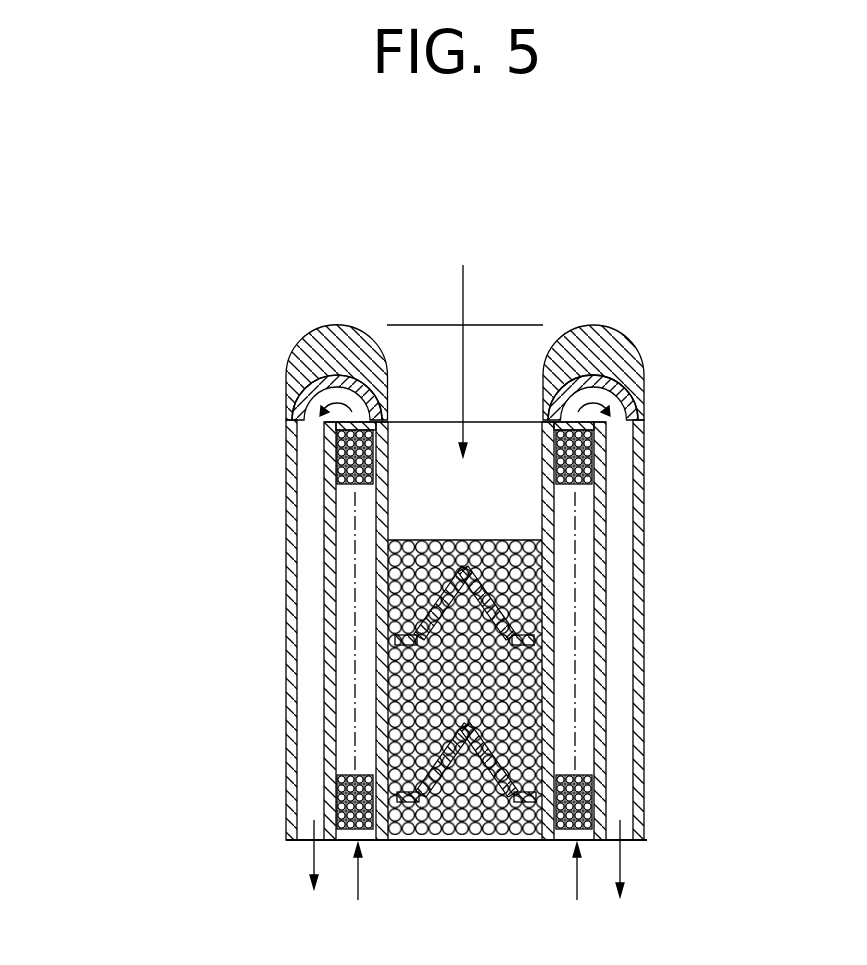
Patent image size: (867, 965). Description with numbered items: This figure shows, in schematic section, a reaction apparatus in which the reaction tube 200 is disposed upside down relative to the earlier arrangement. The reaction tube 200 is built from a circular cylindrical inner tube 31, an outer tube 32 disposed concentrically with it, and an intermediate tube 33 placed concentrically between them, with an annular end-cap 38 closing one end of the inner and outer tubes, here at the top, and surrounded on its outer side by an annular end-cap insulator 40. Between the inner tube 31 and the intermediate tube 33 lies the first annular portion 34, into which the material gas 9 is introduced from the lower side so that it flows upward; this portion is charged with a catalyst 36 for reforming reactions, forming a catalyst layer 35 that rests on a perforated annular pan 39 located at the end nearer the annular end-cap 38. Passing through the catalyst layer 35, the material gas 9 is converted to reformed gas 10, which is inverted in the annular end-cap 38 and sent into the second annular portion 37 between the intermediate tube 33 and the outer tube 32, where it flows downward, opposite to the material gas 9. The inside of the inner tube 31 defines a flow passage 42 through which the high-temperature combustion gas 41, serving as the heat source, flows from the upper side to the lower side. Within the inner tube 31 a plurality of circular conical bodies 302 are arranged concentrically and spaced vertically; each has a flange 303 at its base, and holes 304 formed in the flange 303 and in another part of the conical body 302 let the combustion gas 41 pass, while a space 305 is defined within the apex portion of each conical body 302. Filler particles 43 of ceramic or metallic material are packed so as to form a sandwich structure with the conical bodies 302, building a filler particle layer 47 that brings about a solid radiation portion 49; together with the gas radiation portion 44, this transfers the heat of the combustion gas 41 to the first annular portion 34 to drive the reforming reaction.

The reaction tube 200 is at (280, 567).
The annular end-cap insulator 40 is at (290, 383).
The annular end-cap 38 is at (300, 390).
The annular pan 39 is at (304, 440).
The outer tube 32 is at (292, 705).
The intermediate tube 33 is at (330, 655).
The second annular portion 37 is at (380, 605).
The inner tube 31 is at (370, 740).
The catalyst 36 is at (352, 788).
The catalyst layer 35 is at (352, 818).
The combustion gas 41 is at (440, 283).
The flow passage 42 is at (420, 503).
The gas radiation portion 44 is at (520, 503).
The first annular portion 34 is at (352, 842).
The flange 303 is at (500, 705).
The circular conical body 302 is at (500, 600).
The holes 304 is at (530, 638).
The space 305 is at (500, 577).
The filler particle layer 47 is at (500, 712).
The solid radiation portion 49 is at (500, 742).
The filler particles 43 is at (485, 815).
The reformed gas 10 is at (303, 348).
The material gas 9 is at (358, 870).